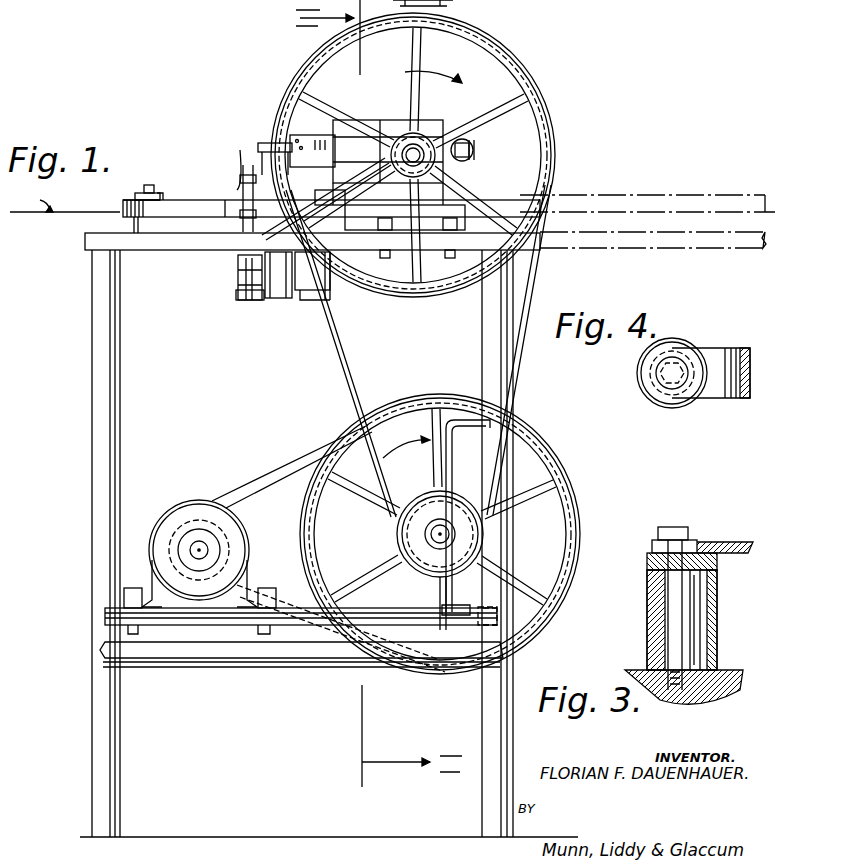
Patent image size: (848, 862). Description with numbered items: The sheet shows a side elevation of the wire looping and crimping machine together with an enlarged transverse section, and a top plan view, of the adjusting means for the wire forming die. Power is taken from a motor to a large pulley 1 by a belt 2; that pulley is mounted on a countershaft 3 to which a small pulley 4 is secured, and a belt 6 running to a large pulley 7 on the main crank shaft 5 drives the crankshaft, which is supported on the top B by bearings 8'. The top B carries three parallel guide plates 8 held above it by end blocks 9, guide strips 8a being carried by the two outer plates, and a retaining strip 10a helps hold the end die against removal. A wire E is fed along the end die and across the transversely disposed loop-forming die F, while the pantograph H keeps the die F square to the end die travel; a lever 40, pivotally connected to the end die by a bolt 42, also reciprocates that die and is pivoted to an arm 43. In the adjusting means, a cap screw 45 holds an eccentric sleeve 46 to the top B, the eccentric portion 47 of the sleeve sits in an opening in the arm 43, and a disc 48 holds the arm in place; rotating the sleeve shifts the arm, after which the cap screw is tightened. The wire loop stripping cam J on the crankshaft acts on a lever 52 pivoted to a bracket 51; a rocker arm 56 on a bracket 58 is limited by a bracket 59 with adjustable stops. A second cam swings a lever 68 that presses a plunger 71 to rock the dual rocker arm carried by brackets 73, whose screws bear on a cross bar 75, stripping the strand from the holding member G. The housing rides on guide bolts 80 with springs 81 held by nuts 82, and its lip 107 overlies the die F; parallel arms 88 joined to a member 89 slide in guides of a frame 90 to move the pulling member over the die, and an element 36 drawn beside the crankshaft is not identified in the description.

In FIG. 1, the large pulley 1 is at (560, 506).
In FIG. 1, the belt 2 is at (547, 452).
In FIG. 1, the countershaft 3 is at (436, 546).
In FIG. 1, the small pulley 4 is at (412, 496).
In FIG. 1, the main crank shaft 5 is at (410, 147).
In FIG. 1, the belt 6 is at (522, 78).
In FIG. 1, the large pulley 7 is at (542, 136).
In FIG. 1, the guide plates 8 is at (424, 211).
In FIG. 1, the bearings 8' is at (440, 9).
In FIG. 1, the guide strips 8a is at (125, 197).
In FIG. 1, the end blocks 9 is at (136, 250).
In FIG. 1, the retaining strip 10a is at (139, 196).
In FIG. 1, the bearing 36 is at (470, 160).
In FIG. 1, the lever 40 is at (160, 196).
In FIG. 1, the bolt 42 is at (150, 185).
In FIG. 4, the arm 43 is at (733, 398).
In FIG. 3, the arm 43 is at (745, 544).
In FIG. 4, the cap screw 45 is at (668, 396).
In FIG. 3, the cap screw 45 is at (676, 528).
In FIG. 4, the eccentric sleeve 46 is at (716, 350).
In FIG. 3, the eccentric sleeve 46 is at (706, 620).
In FIG. 4, the eccentric portion 47 is at (686, 404).
In FIG. 3, the eccentric portion 47 is at (700, 553).
In FIG. 4, the disc 48 is at (658, 368).
In FIG. 3, the disc 48 is at (655, 540).
In FIG. 1, the bracket 51 is at (352, 196).
In FIG. 1, the lever 52 is at (350, 150).
In FIG. 1, the rocker arm 56 is at (249, 300).
In FIG. 1, the bracket 58 is at (238, 280).
In FIG. 1, the bracket 59 is at (236, 296).
In FIG. 1, the lever 68 is at (372, 240).
In FIG. 1, the plunger 71 is at (288, 268).
In FIG. 1, the brackets 73 is at (327, 280).
In FIG. 1, the cross bar 75 is at (302, 296).
In FIG. 1, the guide bolts 80 is at (240, 177).
In FIG. 1, the springs 81 is at (250, 200).
In FIG. 1, the nuts 82 is at (247, 165).
In FIG. 1, the parallel arms 88 is at (325, 150).
In FIG. 1, the member 89 is at (275, 148).
In FIG. 1, the frame 90 is at (447, 124).
In FIG. 1, the lip 107 is at (224, 211).
In FIG. 1, the frame upright A is at (92, 396).
In FIG. 1, the top B is at (85, 240).
In FIG. 3, the top B is at (720, 669).
In FIG. 1, the wire E is at (65, 201).
In FIG. 1, the loop-forming die F is at (237, 185).
In FIG. 1, the holding member G is at (196, 486).
In FIG. 1, the pantograph H is at (82, 6).
In FIG. 1, the wire loop stripping cam J is at (364, 37).
In FIG. 1, the section line V is at (379, 398).